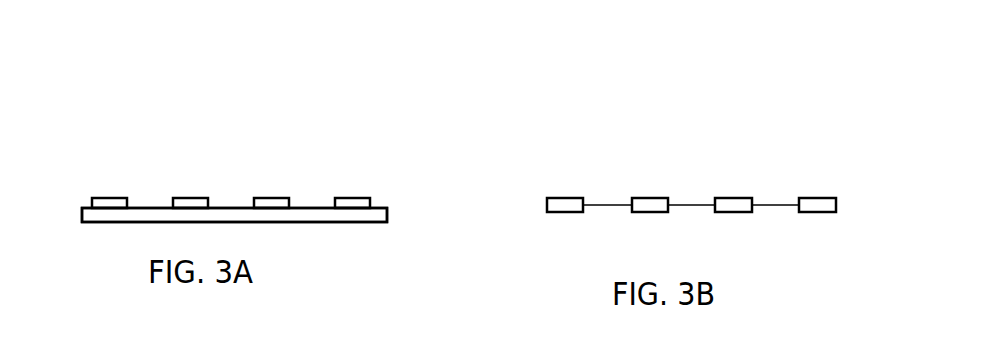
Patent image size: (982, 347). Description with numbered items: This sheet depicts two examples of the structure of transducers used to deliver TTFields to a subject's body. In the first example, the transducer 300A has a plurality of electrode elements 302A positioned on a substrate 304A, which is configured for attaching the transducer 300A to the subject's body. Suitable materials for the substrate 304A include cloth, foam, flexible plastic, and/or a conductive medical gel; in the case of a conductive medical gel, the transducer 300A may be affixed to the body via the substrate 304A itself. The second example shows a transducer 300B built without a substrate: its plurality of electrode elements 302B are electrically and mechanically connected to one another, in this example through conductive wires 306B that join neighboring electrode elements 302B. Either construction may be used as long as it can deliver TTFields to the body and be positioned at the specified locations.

In FIG. 3A, the transducer 300A is at (155, 158).
In FIG. 3A, the electrode elements 302A is at (264, 197).
In FIG. 3A, the substrate 304A is at (310, 207).
In FIG. 3B, the transducer 300B is at (604, 168).
In FIG. 3B, the electrode elements 302B is at (657, 197).
In FIG. 3B, the conductive wires 306B is at (772, 204).